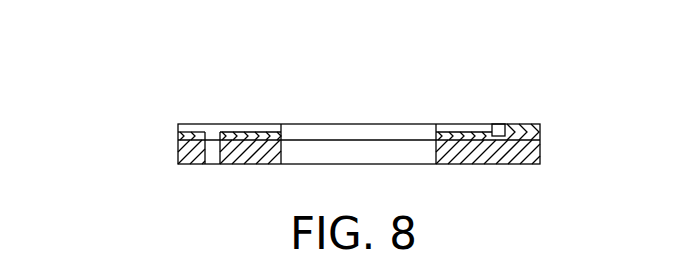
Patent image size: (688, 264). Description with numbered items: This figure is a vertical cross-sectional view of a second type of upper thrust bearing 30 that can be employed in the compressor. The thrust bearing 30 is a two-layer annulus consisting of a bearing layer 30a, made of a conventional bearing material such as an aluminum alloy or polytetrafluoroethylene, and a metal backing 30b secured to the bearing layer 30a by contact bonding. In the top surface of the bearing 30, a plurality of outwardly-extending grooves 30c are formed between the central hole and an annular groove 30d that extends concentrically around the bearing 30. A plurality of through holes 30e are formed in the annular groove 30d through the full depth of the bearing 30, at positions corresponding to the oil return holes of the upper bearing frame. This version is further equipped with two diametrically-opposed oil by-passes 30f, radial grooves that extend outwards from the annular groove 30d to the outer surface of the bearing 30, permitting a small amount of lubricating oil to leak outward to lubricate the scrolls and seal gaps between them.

The upper thrust bearing 30 is at (135, 152).
The bearing layer 30a is at (540, 130).
The metal backing 30b is at (540, 152).
The outwardly-extending grooves 30c is at (250, 132).
The annular groove 30d is at (499, 125).
The through holes 30e is at (213, 150).
The oil by-passes 30f is at (190, 125).